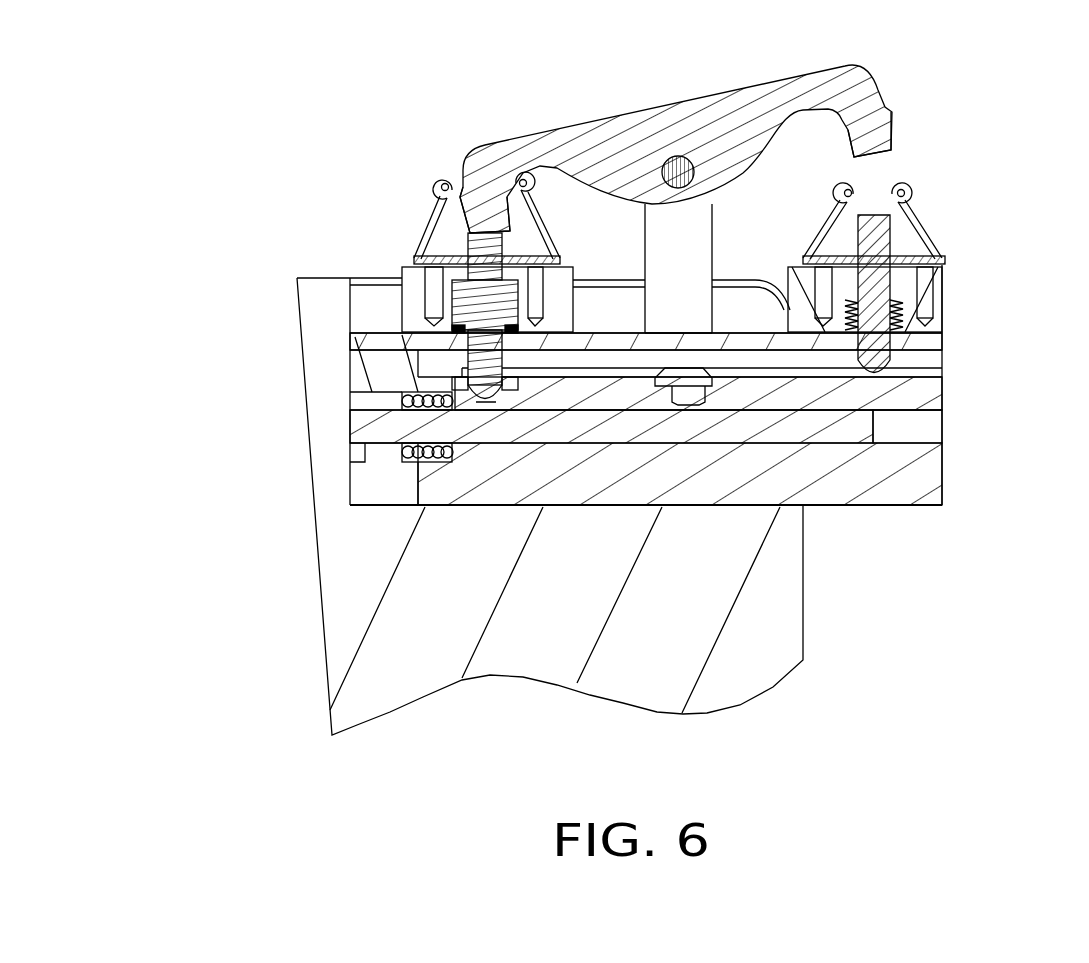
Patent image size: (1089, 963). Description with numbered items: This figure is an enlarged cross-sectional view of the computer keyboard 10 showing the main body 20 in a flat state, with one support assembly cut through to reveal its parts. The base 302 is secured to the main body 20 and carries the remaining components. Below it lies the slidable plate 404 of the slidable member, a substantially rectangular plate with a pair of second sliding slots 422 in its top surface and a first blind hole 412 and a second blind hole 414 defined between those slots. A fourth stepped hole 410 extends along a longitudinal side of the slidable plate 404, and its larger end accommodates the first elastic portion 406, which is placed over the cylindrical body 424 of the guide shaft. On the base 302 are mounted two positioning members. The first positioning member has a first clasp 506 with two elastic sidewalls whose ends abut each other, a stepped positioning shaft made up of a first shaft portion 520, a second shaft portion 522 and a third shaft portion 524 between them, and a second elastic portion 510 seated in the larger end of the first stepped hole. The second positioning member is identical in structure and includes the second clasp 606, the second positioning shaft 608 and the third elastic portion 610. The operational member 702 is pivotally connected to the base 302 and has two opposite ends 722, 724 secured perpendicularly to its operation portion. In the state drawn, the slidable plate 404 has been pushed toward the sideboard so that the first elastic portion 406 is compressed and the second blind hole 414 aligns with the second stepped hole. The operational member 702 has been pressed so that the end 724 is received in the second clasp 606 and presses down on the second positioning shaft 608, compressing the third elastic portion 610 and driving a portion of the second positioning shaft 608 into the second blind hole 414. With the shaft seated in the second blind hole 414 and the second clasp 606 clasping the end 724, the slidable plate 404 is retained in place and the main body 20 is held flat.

The computer keyboard 10 is at (876, 58).
The main body 20 is at (318, 310).
The base 302 is at (380, 367).
The slidable plate 404 is at (423, 507).
The first elastic portion 406 is at (395, 468).
The fourth stepped hole 410 is at (913, 425).
The first blind hole 412 is at (692, 395).
The second blind hole 414 is at (402, 396).
The second sliding slots 422 is at (400, 440).
The cylindrical body 424 is at (815, 430).
The first clasp 506 is at (942, 245).
The second elastic portion 510 is at (893, 322).
The first shaft portion 520 is at (910, 205).
The second shaft portion 522 is at (905, 373).
The third shaft portion 524 is at (883, 285).
The second clasp 606 is at (443, 220).
The second positioning shaft 608 is at (480, 298).
The third elastic portion 610 is at (450, 330).
The operational member 702 is at (632, 138).
The end 722 is at (870, 132).
The end 724 is at (490, 220).